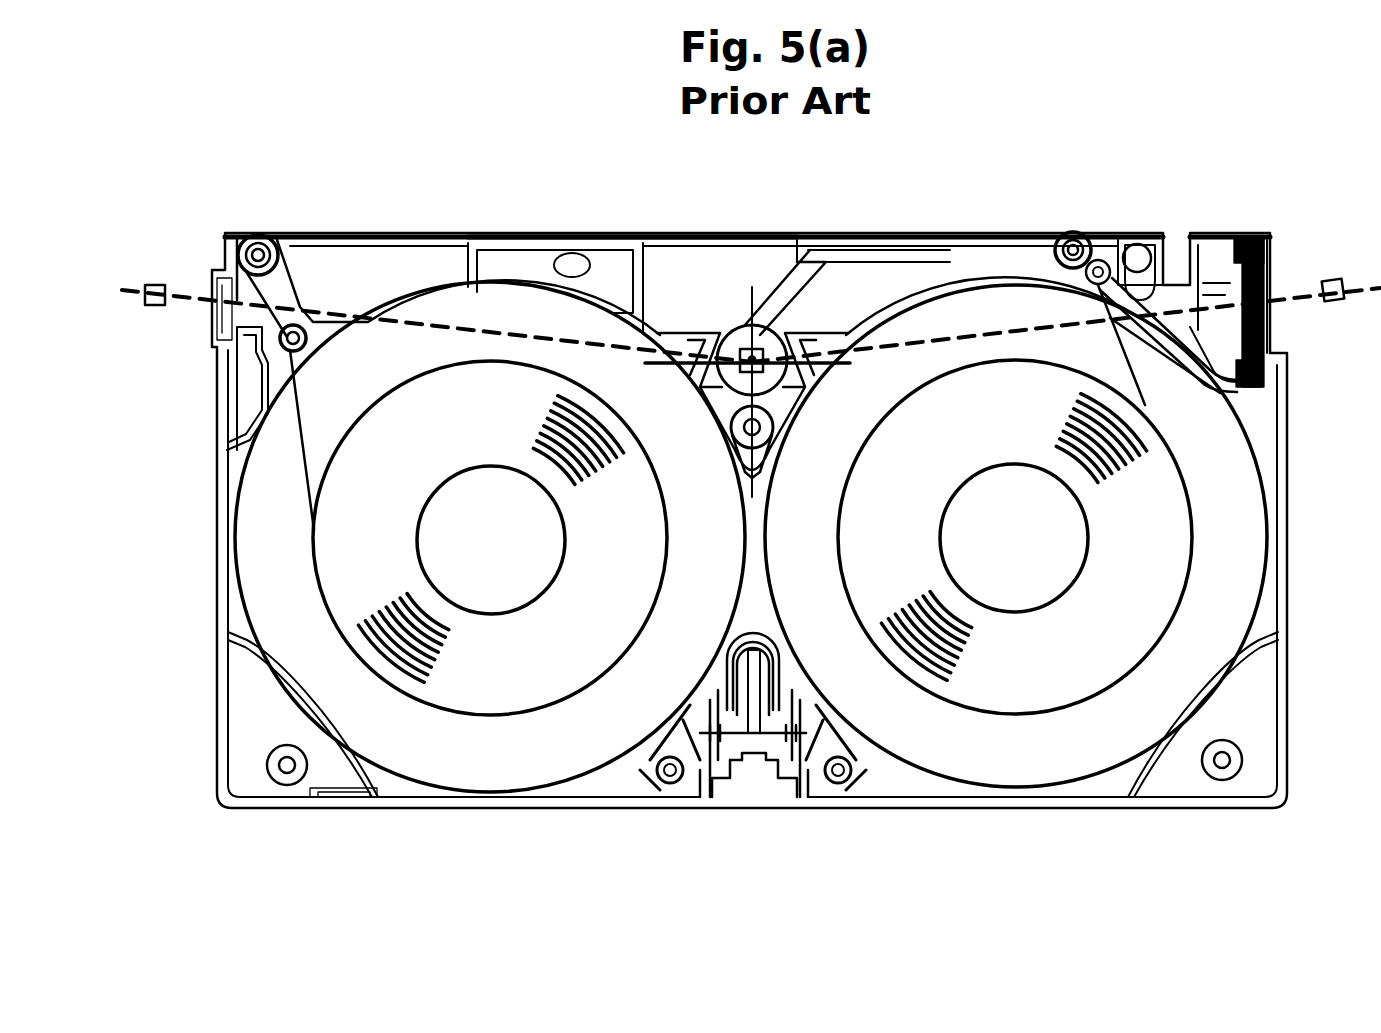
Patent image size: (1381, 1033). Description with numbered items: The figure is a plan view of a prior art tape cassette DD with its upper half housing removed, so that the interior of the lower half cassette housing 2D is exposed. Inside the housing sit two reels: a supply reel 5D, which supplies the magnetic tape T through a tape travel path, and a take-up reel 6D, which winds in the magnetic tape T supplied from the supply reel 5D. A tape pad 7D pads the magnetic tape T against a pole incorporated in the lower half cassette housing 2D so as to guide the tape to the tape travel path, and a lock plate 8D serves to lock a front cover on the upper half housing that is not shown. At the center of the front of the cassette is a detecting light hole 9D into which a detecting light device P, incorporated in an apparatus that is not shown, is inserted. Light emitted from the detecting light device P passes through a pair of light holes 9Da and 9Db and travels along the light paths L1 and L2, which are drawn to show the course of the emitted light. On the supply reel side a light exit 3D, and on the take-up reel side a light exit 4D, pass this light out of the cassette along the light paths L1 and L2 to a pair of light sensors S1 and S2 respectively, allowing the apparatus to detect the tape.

The tape cassette DD is at (708, 910).
The lower half cassette housing 2D is at (773, 805).
The light exit 3D is at (230, 303).
The light exit 4D is at (1277, 300).
The supply reel 5D is at (508, 758).
The take-up reel 6D is at (1040, 760).
The tape pad 7D is at (297, 303).
The lock plate 8D is at (1257, 237).
The detecting light hole 9D is at (770, 345).
The light hole 9Da is at (712, 360).
The light hole 9Db is at (812, 355).
The detecting light device P is at (800, 350).
The magnetic tape T is at (680, 235).
The light path L1 is at (417, 322).
The light path L2 is at (1010, 330).
The light sensor S1 is at (158, 283).
The light sensor S2 is at (1337, 277).